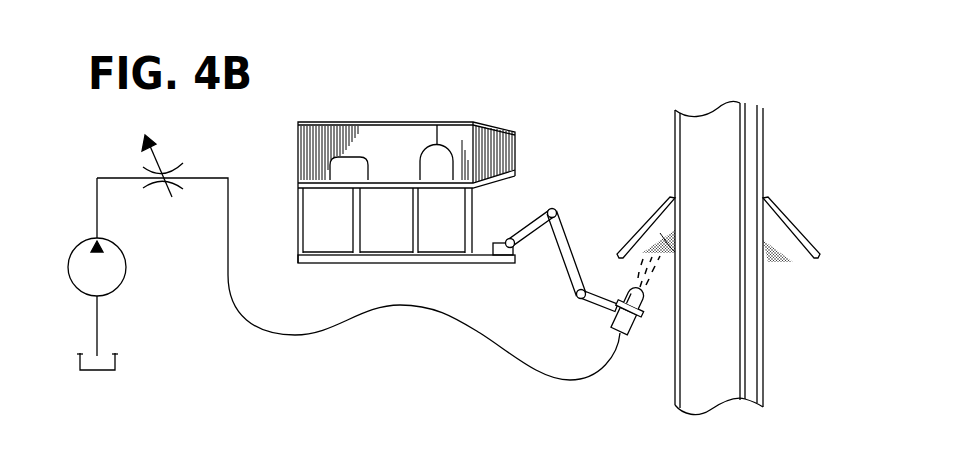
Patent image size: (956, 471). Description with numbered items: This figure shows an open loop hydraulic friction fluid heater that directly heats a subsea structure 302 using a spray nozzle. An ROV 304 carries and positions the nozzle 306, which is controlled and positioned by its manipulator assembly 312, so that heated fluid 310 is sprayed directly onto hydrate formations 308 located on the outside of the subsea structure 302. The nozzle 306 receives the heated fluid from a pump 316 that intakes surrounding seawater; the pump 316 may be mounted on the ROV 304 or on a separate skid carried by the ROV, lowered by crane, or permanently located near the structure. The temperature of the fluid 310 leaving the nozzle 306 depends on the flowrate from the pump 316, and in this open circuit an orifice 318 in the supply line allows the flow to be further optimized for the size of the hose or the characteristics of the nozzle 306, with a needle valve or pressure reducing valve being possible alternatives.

The subsea structure 302 is at (760, 370).
The ROV 304 is at (393, 132).
The nozzle 306 is at (638, 337).
The hydrate formations 308 is at (773, 233).
The heated fluid 310 is at (626, 246).
The manipulator assembly 312 is at (573, 250).
The pump 316 is at (75, 268).
The orifice 318 is at (164, 174).